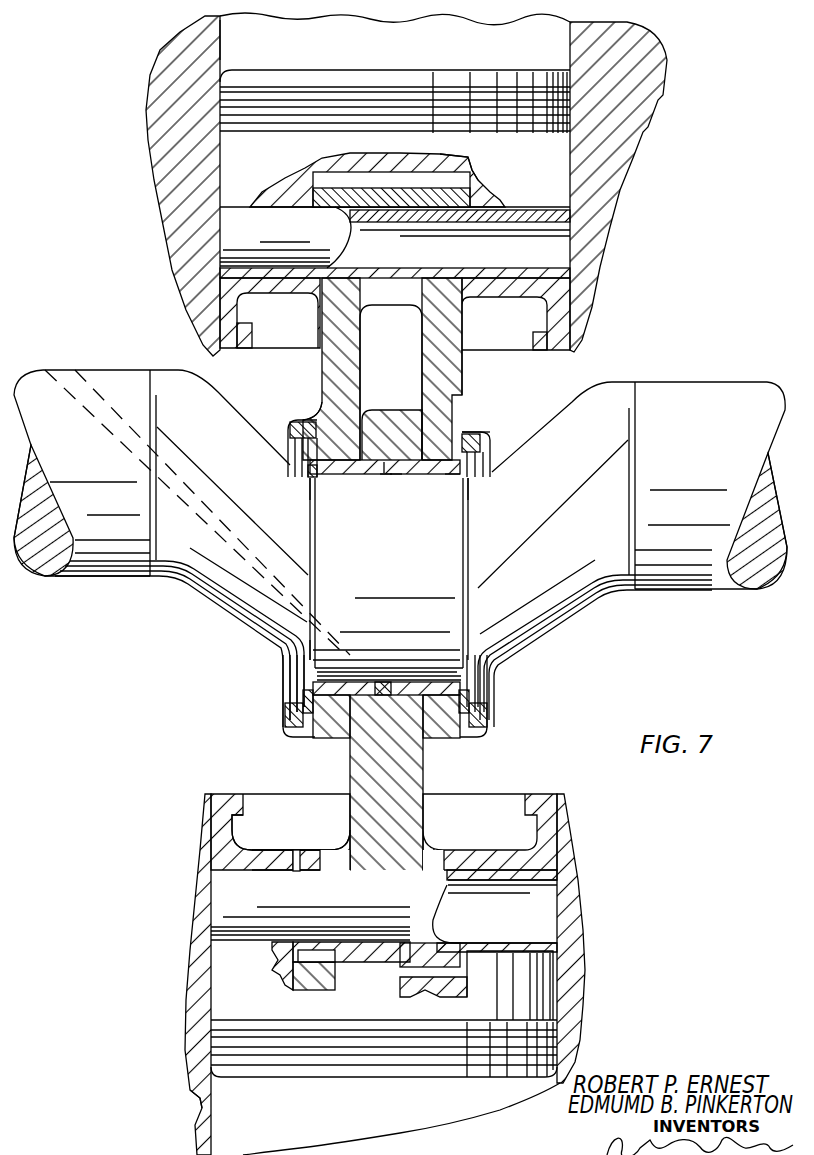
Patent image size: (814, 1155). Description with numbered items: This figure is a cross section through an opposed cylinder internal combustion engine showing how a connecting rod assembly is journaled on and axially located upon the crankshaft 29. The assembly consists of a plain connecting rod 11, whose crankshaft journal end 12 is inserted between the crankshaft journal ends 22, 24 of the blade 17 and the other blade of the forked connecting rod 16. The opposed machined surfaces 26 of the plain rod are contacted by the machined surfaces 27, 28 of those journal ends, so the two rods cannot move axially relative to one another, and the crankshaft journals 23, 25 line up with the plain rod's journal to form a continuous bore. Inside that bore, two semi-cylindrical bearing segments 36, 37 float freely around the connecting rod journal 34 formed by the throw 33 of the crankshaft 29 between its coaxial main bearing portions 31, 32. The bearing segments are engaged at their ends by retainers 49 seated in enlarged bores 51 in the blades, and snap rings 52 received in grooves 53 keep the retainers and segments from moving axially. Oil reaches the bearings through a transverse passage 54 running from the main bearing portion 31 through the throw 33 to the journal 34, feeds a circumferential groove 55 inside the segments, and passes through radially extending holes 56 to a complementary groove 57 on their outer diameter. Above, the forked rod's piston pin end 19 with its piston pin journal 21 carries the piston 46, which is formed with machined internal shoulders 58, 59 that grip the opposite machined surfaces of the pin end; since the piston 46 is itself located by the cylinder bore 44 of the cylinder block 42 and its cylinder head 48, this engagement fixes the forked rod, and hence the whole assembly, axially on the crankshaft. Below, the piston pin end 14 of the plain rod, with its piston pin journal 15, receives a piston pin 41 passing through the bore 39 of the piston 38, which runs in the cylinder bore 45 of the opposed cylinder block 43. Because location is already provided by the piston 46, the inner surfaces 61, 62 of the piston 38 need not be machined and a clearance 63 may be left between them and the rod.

The plain connecting rod 11 is at (422, 798).
The crankshaft journal end 12 is at (420, 735).
The piston pin end 14 is at (462, 858).
The piston pin journal 15 is at (318, 870).
The forked connecting rod 16 is at (466, 378).
The blade 17 is at (322, 352).
The piston pin end 19 is at (391, 189).
The piston pin journal 21 is at (395, 219).
The crankshaft journal end 22 is at (290, 419).
The crankshaft journal 23 is at (350, 477).
The crankshaft journal end 24 is at (490, 432).
The crankshaft journal 25 is at (452, 477).
The machined surfaces 26 is at (422, 432).
The machined surface 27 is at (365, 428).
The machined surface 28 is at (396, 477).
The crankshaft 29 is at (182, 580).
The main bearing portion 31 is at (105, 565).
The main bearing portion 32 is at (682, 580).
The throw 33 is at (590, 586).
The connecting rod journal 34 is at (440, 580).
The bearing segment 36 is at (466, 480).
The bearing segment 37 is at (442, 683).
The piston 38 is at (268, 1065).
The bore 39 is at (262, 870).
The piston pin 41 is at (250, 938).
The cylinder block 42 is at (205, 848).
The cylinder block 43 is at (180, 210).
The cylinder bore 44 is at (202, 1100).
The cylinder bore 45 is at (221, 28).
The piston 46 is at (285, 90).
The cylinder head 48 is at (466, 352).
The retainer 49 is at (312, 478).
The enlarged bore 51 is at (288, 710).
The snap ring 52 is at (296, 444).
The groove 53 is at (290, 430).
The transverse passage 54 is at (196, 482).
The circumferential groove 55 is at (387, 478).
The radially extending hole 56 is at (388, 683).
The complementary groove 57 is at (390, 470).
The machined internal shoulder 58 is at (320, 172).
The machined internal shoulder 59 is at (468, 172).
The inner surface 61 is at (296, 868).
The inner surface 62 is at (458, 885).
The clearance 63 is at (300, 858).